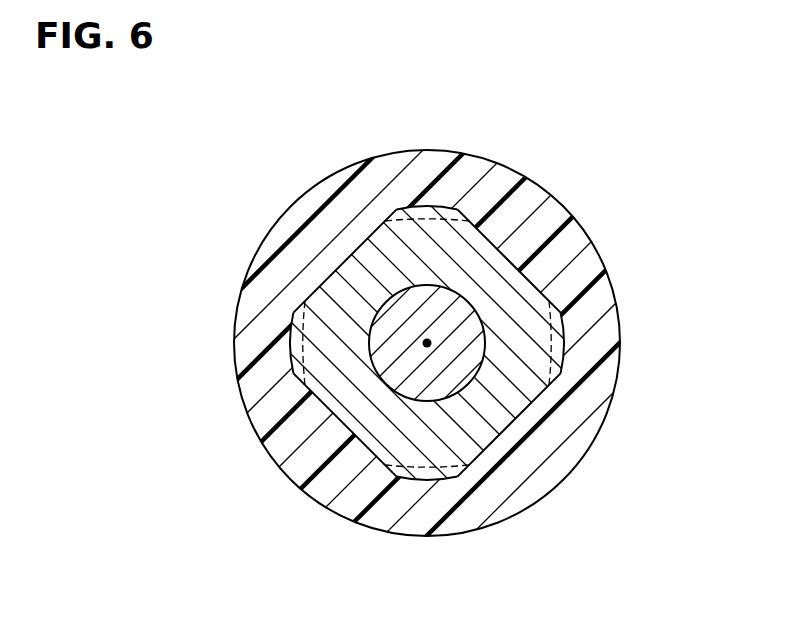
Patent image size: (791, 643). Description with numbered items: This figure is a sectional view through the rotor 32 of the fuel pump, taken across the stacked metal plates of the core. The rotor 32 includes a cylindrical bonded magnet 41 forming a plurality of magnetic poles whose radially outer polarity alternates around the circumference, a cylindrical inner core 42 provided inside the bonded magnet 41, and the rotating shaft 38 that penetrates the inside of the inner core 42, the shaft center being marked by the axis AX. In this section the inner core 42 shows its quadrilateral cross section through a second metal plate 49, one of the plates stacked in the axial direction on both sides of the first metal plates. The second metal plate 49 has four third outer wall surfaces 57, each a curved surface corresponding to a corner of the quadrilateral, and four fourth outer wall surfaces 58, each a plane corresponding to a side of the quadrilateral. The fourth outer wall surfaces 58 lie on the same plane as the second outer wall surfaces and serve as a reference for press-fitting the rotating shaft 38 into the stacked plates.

The rotor 32 is at (296, 196).
The bonded magnet 41 is at (262, 297).
The inner core 42 is at (332, 270).
The second metal plate 49 is at (447, 262).
The third outer wall surface 57 is at (435, 206).
The fourth outer wall surface 58 is at (351, 222).
The rotating shaft 38 is at (470, 353).
The axis AX is at (427, 343).